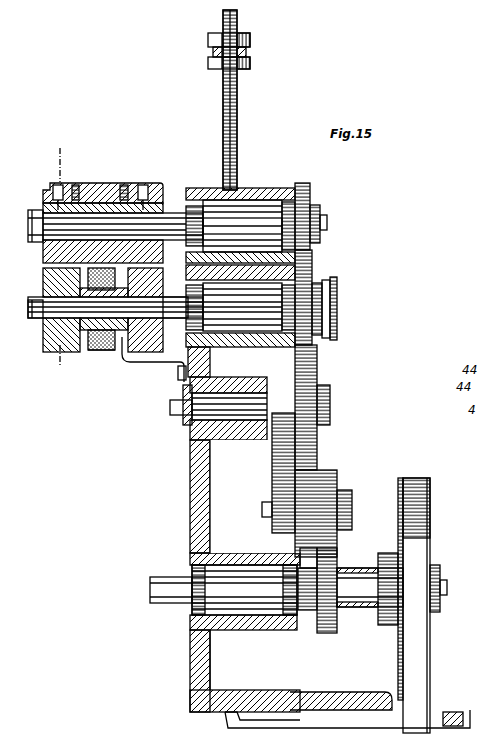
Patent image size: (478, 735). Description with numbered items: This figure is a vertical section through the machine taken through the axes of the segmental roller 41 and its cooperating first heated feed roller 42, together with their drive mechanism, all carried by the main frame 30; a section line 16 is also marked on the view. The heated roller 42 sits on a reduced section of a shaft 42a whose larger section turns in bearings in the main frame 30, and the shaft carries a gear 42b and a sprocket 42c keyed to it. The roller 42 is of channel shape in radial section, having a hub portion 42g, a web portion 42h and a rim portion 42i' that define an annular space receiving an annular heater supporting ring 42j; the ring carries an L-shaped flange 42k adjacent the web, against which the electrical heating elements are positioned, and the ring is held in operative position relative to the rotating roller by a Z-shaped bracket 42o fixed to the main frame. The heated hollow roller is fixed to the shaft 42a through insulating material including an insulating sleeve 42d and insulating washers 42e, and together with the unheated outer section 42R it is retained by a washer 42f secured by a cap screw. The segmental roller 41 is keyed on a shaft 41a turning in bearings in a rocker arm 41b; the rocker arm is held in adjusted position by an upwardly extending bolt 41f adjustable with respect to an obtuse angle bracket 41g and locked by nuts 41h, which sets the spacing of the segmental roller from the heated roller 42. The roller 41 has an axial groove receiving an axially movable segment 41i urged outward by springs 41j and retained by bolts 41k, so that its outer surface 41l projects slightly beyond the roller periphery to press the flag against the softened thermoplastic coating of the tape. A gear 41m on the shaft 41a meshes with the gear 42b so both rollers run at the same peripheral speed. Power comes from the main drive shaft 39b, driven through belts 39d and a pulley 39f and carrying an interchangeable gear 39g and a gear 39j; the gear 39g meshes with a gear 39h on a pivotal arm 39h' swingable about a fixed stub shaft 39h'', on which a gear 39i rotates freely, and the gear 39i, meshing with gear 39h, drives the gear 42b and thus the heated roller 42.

The section line 16- 16 is at (58, 152).
The main frame 30 is at (190, 500).
The segmental roller 41 is at (48, 256).
The shaft 41a is at (248, 200).
The rocker arm 41b is at (243, 190).
The bolt 41f is at (238, 100).
The obtuse angle bracket 41g is at (250, 52).
The nuts 41h is at (208, 62).
The axially movable segment 41i is at (123, 185).
The springs 41j is at (76, 185).
The bolts 41k is at (53, 192).
The outer surface of segment 41l is at (143, 185).
The gear 41m is at (310, 192).
The first heated feed roller 42 is at (104, 352).
The shaft 42a is at (236, 331).
The gear 42b is at (312, 276).
The sprocket 42c is at (337, 310).
The insulating sleeve 42d is at (98, 303).
The insulating washers 42e is at (136, 306).
The washer 42f is at (40, 300).
The hub portion 42g is at (112, 292).
The web portion 42h is at (90, 330).
The rim portion 42i' is at (151, 360).
The annular heater supporting ring 42j is at (145, 335).
The L-shaped flange 42k is at (85, 346).
The Z-shaped bracket 42o is at (178, 372).
The unheated section 42R is at (46, 338).
The main drive shaft 39b is at (364, 580).
The belts 39d is at (432, 464).
The pulley 39f is at (410, 527).
The gear 39g is at (327, 635).
The gear 39h is at (335, 511).
The pivotal arm 39h' is at (260, 473).
The fixed stub shaft 39h'' is at (204, 417).
The gear 39i is at (317, 446).
The gear 39j is at (306, 612).